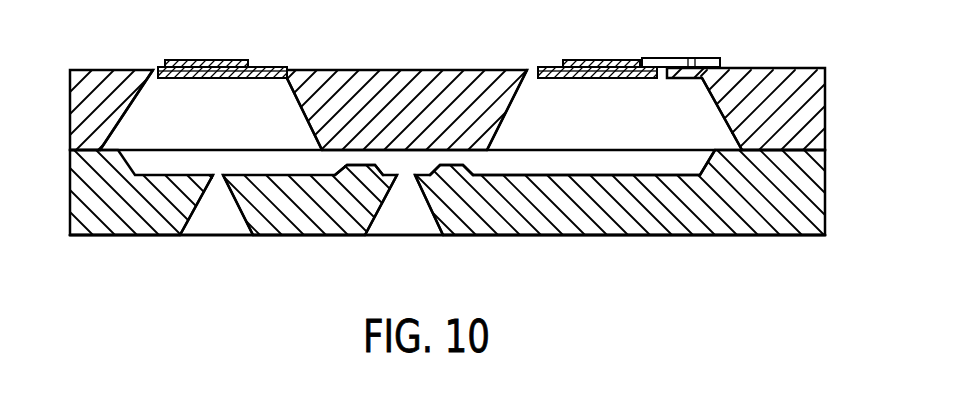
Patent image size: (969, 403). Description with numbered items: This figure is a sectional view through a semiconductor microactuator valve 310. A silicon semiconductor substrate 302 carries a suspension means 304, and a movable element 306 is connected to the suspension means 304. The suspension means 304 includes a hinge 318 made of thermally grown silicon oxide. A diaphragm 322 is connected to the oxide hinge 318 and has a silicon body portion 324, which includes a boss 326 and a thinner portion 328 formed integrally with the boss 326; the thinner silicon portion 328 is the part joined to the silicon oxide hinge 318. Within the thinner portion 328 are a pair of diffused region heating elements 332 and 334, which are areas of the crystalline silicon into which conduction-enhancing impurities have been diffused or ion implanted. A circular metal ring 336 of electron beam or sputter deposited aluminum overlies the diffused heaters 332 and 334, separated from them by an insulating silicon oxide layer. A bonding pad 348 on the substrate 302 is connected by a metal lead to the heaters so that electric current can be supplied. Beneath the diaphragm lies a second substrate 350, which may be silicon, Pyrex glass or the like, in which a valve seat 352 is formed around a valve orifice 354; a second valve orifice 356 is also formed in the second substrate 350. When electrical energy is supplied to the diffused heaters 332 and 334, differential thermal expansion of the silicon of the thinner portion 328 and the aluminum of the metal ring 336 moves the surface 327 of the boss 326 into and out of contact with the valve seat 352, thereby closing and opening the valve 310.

The valve 310 is at (74, 62).
The silicon semiconductor substrate 302 is at (797, 67).
The suspension means 304 is at (160, 66).
The movable element 306 is at (413, 67).
The hinge 318 is at (150, 74).
The diaphragm 322 is at (538, 66).
The silicon body portion 324 is at (496, 112).
The boss 326 is at (300, 108).
The surface of the boss 327 is at (474, 160).
The thinner portion 328 is at (210, 78).
The diffused region heating element 332 is at (187, 78).
The diffused region heating element 334 is at (227, 80).
The circular metal ring 336 is at (213, 58).
The bonding pad 348 is at (711, 55).
The second substrate 350 is at (115, 228).
The valve seat 352 is at (443, 164).
The valve orifice 354 is at (403, 222).
The second valve orifice 356 is at (222, 217).